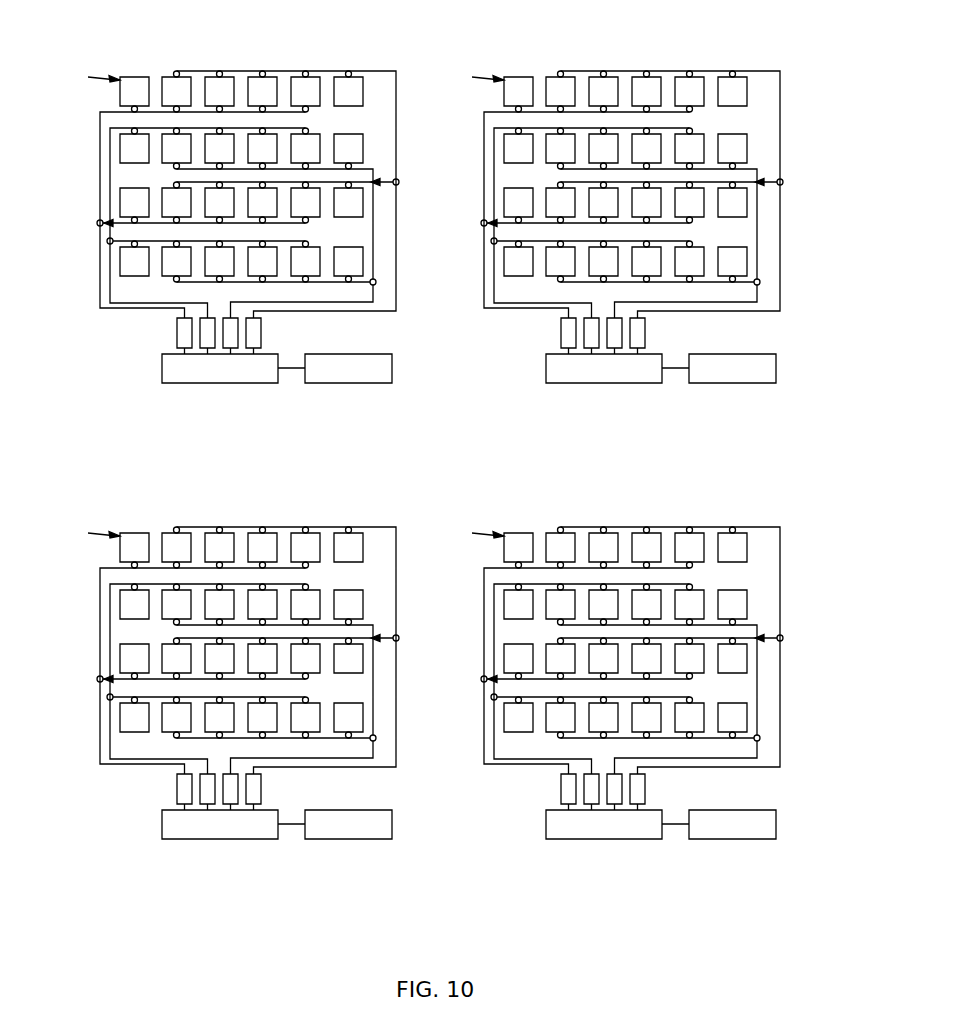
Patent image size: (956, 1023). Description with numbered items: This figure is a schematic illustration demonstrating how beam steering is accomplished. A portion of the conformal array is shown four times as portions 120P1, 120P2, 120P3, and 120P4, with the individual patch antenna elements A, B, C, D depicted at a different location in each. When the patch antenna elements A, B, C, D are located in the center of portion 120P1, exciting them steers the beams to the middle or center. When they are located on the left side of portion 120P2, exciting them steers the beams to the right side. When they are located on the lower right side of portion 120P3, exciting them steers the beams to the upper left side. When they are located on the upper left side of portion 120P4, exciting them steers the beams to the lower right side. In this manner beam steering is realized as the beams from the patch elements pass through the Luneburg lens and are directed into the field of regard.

The portion of the conformal array 120P1 is at (228, 73).
The portion of the conformal array 120P2 is at (612, 73).
The portion of the conformal array 120P3 is at (160, 734).
The portion of the conformal array 120P4 is at (748, 708).